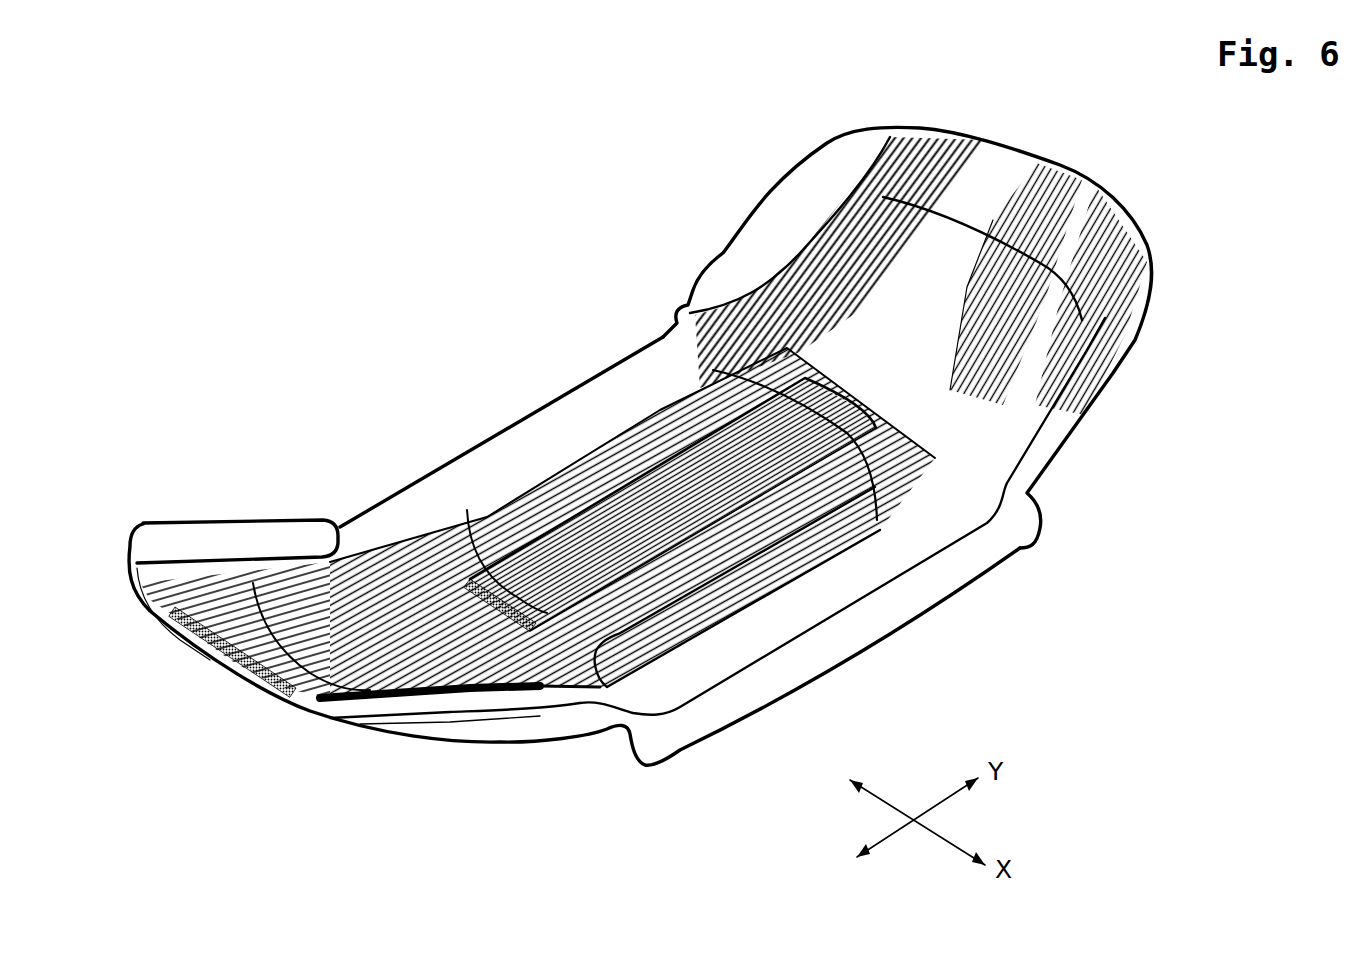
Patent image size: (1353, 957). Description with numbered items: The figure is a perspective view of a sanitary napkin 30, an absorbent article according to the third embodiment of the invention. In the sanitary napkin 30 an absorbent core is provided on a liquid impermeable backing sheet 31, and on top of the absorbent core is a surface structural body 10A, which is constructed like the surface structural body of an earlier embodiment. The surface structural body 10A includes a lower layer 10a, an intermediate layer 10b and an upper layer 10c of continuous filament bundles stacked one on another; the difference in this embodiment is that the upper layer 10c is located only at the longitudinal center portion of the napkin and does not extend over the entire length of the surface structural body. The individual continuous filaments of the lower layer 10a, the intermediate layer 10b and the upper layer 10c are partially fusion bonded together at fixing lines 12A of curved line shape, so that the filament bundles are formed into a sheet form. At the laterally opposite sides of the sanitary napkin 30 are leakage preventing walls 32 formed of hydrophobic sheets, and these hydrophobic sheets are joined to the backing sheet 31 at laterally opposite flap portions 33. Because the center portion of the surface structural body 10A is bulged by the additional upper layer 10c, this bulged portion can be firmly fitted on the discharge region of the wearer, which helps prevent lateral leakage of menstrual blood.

The surface structural body 10A is at (910, 112).
The lower layer 10a is at (990, 397).
The intermediate layer 10b is at (980, 197).
The upper layer 10c is at (727, 483).
The fixing lines 12A is at (1085, 275).
The sanitary napkin 30 is at (632, 300).
The backing sheet 31 is at (467, 738).
The leakage preventing walls 32 is at (500, 450).
The flap portions 33 is at (780, 230).